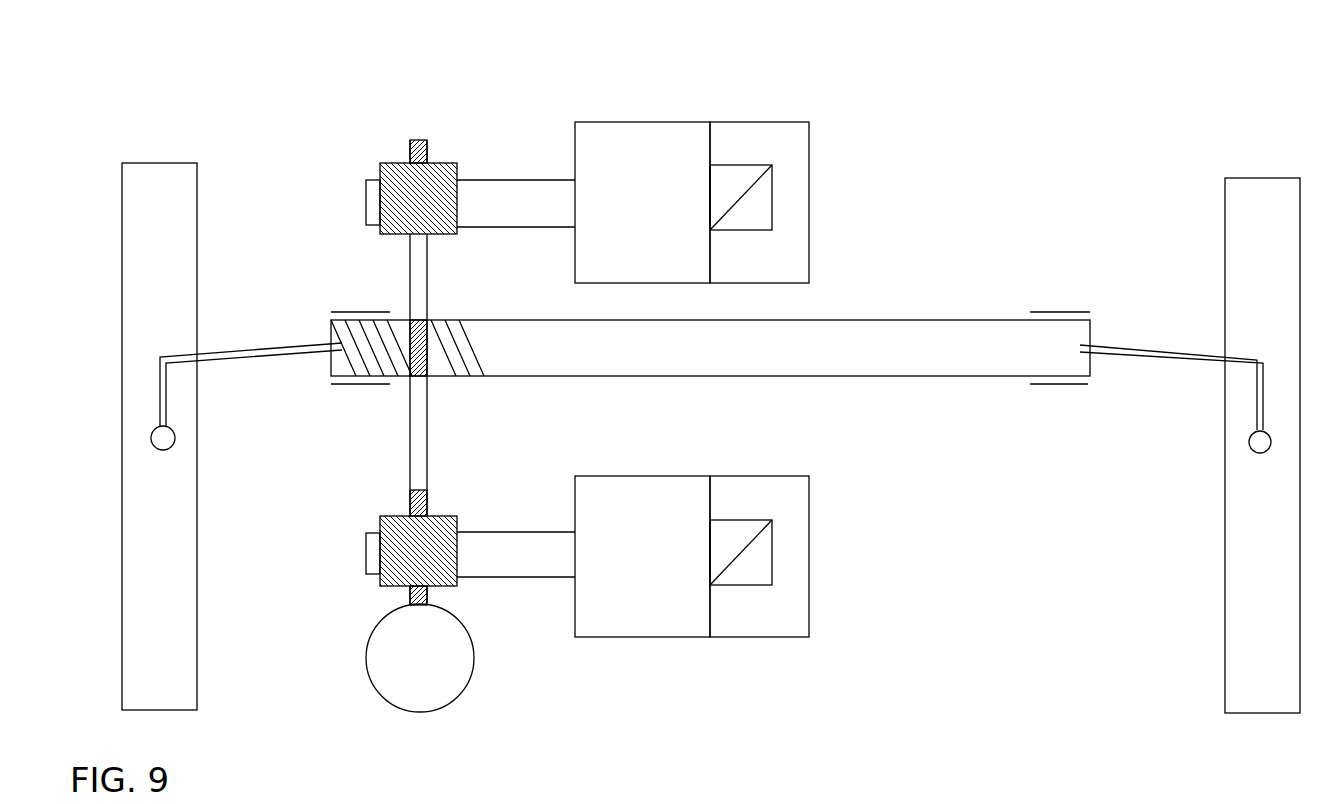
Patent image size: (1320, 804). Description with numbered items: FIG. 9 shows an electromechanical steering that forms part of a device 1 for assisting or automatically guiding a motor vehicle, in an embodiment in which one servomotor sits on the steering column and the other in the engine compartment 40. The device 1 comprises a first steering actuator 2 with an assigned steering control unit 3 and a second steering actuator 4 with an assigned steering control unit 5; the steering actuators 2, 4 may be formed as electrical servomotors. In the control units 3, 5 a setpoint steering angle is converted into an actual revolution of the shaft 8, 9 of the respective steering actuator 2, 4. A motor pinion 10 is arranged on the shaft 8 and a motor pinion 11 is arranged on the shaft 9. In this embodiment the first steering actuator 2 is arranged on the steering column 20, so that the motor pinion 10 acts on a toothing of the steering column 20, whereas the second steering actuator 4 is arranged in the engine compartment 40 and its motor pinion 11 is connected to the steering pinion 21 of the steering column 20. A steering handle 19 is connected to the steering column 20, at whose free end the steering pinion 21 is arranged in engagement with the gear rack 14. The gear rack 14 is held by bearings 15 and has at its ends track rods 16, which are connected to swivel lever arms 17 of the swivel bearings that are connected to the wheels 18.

The device 1 is at (876, 117).
The engine compartment 40 is at (1020, 96).
The first steering actuator 2 is at (622, 622).
The steering control unit 3 is at (769, 625).
The second steering actuator 4 is at (654, 146).
The steering control unit 5 is at (748, 146).
The shaft 8 is at (520, 558).
The shaft 9 is at (520, 200).
The motor pinion 10 is at (392, 533).
The motor pinion 11 is at (385, 175).
The gear rack 14 is at (902, 355).
The bearings 15 is at (358, 310).
The track rods 16 is at (280, 343).
The swivel lever arms 17 is at (168, 402).
The wheels 18 is at (170, 505).
The steering handle 19 is at (455, 678).
The steering column 20 is at (418, 457).
The steering pinion 21 is at (425, 380).